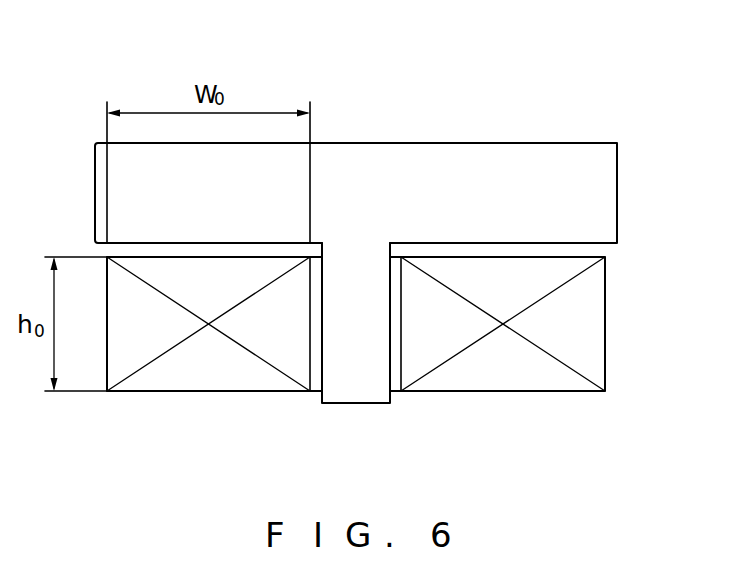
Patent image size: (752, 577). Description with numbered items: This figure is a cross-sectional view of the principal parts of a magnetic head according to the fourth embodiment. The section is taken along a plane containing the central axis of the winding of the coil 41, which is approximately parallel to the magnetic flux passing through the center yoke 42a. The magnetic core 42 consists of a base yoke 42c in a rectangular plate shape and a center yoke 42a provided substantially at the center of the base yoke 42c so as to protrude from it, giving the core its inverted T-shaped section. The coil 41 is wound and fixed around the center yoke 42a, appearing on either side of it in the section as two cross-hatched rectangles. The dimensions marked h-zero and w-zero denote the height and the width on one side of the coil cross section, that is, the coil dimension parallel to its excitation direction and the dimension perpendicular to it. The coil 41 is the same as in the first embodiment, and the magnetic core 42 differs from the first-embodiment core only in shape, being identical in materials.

The coil 41 is at (590, 334).
The magnetic core 42 is at (358, 211).
The center yoke 42a is at (355, 318).
The base yoke 42c is at (592, 177).